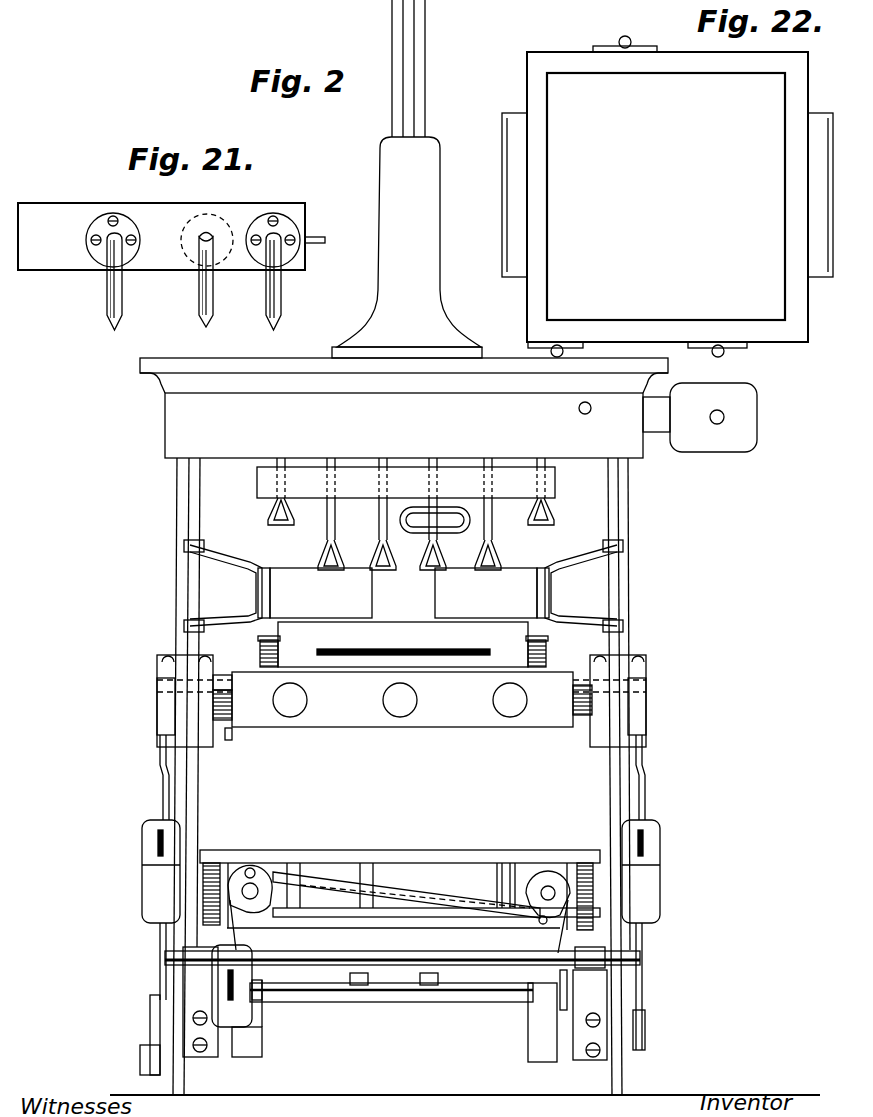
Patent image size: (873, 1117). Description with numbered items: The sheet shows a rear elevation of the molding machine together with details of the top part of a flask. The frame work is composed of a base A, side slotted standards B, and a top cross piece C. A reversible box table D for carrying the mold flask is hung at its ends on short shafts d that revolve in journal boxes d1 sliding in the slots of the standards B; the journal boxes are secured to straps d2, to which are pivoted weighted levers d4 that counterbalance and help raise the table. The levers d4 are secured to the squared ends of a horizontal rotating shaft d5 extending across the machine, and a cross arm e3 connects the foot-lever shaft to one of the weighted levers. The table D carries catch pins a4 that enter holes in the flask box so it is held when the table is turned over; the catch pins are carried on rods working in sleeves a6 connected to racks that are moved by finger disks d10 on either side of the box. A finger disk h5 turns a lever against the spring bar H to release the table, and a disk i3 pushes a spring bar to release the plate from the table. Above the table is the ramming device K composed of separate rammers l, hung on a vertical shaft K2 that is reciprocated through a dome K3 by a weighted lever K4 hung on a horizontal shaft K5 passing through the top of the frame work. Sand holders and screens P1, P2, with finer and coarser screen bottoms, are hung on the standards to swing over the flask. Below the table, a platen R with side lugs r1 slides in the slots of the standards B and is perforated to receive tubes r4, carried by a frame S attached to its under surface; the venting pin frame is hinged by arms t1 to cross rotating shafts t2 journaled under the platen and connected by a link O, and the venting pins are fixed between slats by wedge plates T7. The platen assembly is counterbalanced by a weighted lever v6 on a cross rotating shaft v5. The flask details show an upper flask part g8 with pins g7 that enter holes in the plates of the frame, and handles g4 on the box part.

In FIG. 21, the upper flask part g8 is at (215, 215).
In FIG. 22, the upper flask part g8 is at (631, 70).
In FIG. 21, the pins g7 is at (107, 308).
In FIG. 22, the pins g7 is at (632, 40).
In FIG. 21, the handles g4 is at (324, 248).
In FIG. 22, the handles g4 is at (822, 115).
In FIG. 2, the handles g4 is at (400, 655).
In FIG. 2, the vertical shaft K2 is at (400, 116).
In FIG. 2, the dome K3 is at (407, 247).
In FIG. 2, the top cross piece C is at (404, 425).
In FIG. 2, the horizontal shaft K5 is at (583, 414).
In FIG. 2, the weighted lever K4 is at (652, 412).
In FIG. 2, the side slotted standards B is at (177, 528).
In FIG. 2, the ramming device K is at (257, 487).
In FIG. 2, the rammers l is at (268, 518).
In FIG. 2, the sand holder and screen P1 is at (281, 585).
In FIG. 2, the sand holder and screen P2 is at (526, 585).
In FIG. 2, the catch pins a4 is at (262, 648).
In FIG. 2, the reversible box table D is at (402, 699).
In FIG. 2, the finger disk h5 is at (296, 717).
In FIG. 2, the disk i3 is at (401, 717).
In FIG. 2, the finger disk d10 is at (512, 717).
In FIG. 2, the short shafts d is at (222, 690).
In FIG. 2, the spring bar H is at (227, 742).
In FIG. 2, the journal boxes d1 is at (157, 663).
In FIG. 2, the straps d2 is at (160, 794).
In FIG. 2, the weighted levers d4 is at (401, 935).
In FIG. 2, the platen R is at (382, 855).
In FIG. 2, the side lugs r1 is at (225, 862).
In FIG. 2, the tubes r4 is at (432, 866).
In FIG. 2, the cross rotating shafts t2 is at (256, 873).
In FIG. 2, the arms t1 is at (263, 884).
In FIG. 2, the frame S is at (289, 906).
In FIG. 2, the link O is at (399, 913).
In FIG. 2, the horizontal rotating shaft d5 is at (394, 966).
In FIG. 2, the cross rotating shaft v5 is at (478, 989).
In FIG. 2, the wedge plates T7 is at (428, 986).
In FIG. 2, the weighted lever v6 is at (237, 1001).
In FIG. 2, the sleeves a6 is at (216, 1058).
In FIG. 2, the cross arm e3 is at (150, 1060).
In FIG. 2, the base A is at (465, 1066).